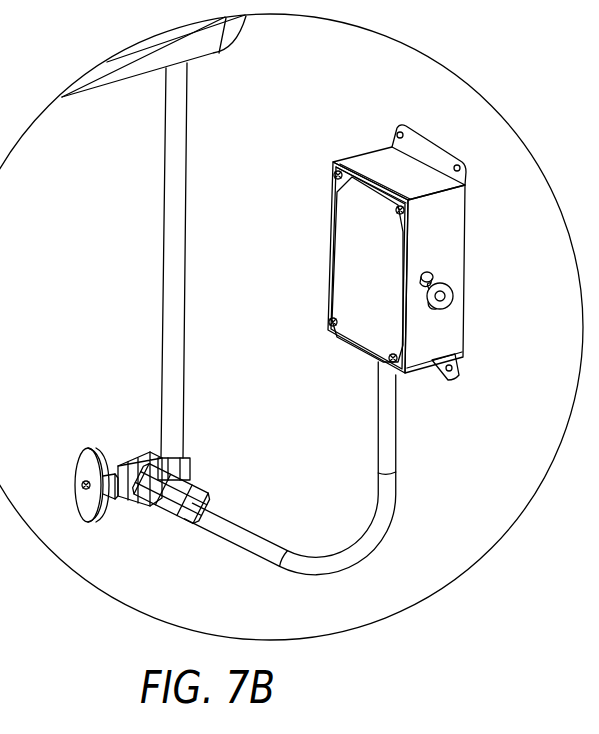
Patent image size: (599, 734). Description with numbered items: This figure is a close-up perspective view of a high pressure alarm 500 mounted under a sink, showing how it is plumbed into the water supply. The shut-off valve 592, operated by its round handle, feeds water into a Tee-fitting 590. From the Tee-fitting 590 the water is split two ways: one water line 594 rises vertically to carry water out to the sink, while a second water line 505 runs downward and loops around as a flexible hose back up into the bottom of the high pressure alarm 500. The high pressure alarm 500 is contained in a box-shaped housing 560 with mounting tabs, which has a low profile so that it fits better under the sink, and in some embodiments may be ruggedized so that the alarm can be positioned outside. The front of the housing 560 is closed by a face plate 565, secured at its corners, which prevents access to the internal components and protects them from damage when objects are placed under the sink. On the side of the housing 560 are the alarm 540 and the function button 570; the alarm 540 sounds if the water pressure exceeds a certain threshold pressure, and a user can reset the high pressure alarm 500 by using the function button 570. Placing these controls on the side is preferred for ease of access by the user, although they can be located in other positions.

The high pressure alarm 500 is at (346, 125).
The water line 505 is at (388, 482).
The alarm 540 is at (453, 293).
The housing 560 is at (452, 327).
The face plate 565 is at (353, 262).
The function button 570 is at (420, 267).
The Tee-fitting 590 is at (162, 503).
The shut-off valve 592 is at (88, 452).
The water line 594 is at (163, 268).